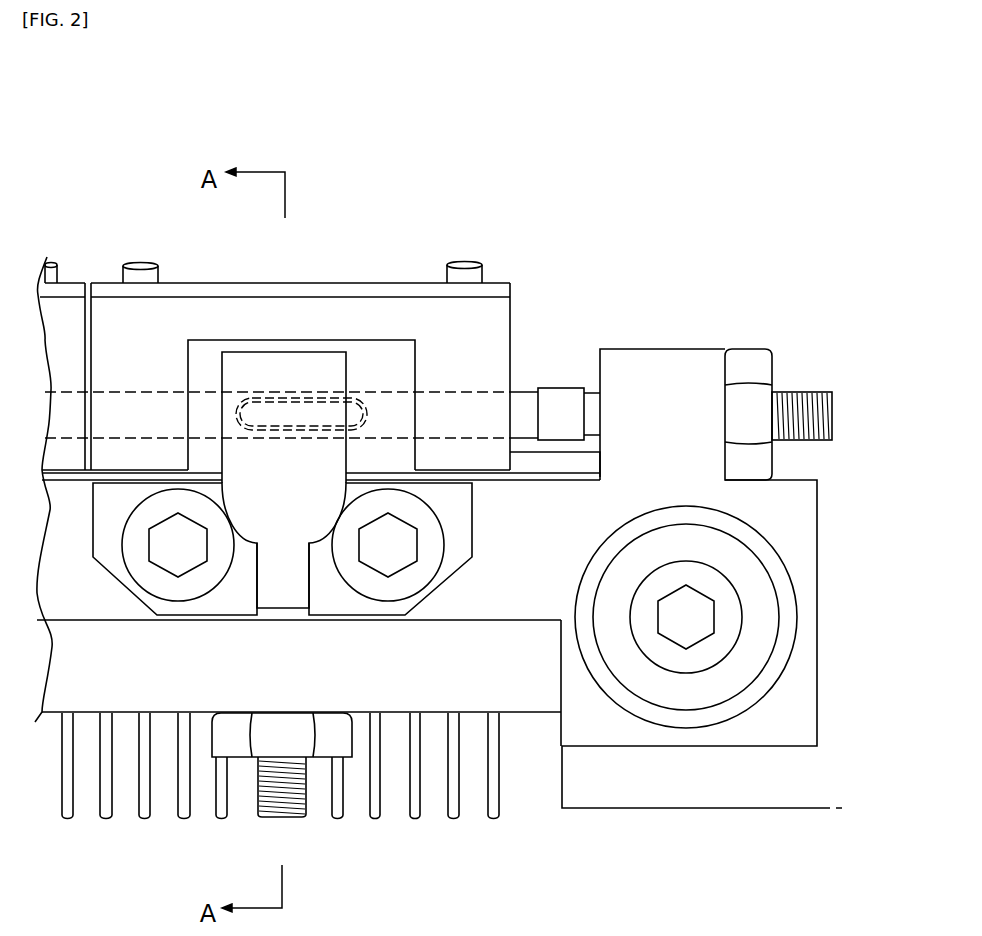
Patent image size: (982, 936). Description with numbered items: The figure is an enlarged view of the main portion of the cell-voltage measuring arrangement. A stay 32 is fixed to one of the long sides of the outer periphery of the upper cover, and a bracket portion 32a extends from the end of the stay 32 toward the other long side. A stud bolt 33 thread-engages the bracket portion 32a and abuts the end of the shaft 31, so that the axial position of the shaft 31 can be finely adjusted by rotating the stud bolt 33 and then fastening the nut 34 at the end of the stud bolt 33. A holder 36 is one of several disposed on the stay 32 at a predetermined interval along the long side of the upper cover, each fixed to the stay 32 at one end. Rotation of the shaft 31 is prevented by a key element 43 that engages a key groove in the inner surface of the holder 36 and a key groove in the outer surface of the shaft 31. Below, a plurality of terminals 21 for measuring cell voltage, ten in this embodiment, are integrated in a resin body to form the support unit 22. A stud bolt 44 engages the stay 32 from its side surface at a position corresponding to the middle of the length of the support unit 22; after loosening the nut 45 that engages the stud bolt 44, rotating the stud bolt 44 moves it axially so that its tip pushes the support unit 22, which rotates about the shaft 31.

The terminals 21 is at (183, 800).
The support unit 22 is at (212, 313).
The shaft 31 is at (393, 407).
The stay 32 is at (798, 527).
The bracket portions 32a is at (652, 355).
The stud bolts 33 is at (825, 402).
The nuts 34 is at (748, 357).
The holders 36 is at (261, 367).
The key element 43 is at (360, 413).
The stud bolt 44 is at (272, 810).
The nut 45 is at (324, 743).